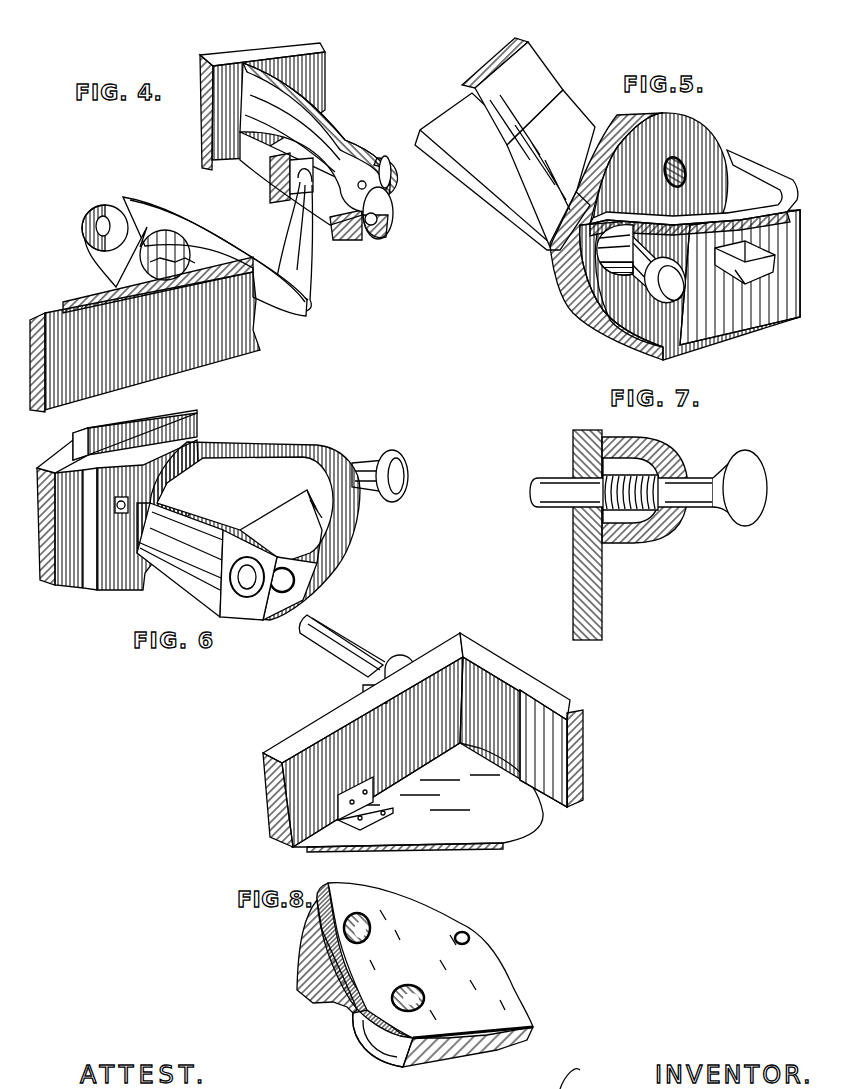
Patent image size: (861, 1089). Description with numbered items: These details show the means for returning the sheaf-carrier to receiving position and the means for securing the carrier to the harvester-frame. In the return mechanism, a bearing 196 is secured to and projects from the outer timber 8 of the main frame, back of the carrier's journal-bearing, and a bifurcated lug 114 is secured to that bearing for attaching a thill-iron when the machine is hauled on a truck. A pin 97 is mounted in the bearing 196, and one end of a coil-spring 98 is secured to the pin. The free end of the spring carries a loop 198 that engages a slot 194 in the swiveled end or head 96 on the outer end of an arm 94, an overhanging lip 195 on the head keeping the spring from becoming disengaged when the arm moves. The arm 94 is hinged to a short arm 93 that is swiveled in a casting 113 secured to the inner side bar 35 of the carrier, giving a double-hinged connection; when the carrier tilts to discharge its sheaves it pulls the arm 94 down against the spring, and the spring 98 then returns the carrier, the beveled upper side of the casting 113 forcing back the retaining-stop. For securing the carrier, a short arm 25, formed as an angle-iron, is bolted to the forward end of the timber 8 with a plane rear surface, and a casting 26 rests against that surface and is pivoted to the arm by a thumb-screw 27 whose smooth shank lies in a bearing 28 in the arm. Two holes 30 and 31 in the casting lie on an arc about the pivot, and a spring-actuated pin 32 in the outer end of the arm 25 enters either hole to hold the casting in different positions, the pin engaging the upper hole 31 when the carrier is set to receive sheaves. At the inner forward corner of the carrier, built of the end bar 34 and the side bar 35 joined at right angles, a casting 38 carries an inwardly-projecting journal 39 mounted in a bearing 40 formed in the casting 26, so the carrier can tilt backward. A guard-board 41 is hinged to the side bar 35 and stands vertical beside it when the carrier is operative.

In FIG. 4, the outer timber 8 is at (312, 79).
In FIG. 4, the bifurcated lug 114 is at (390, 176).
In FIG. 4, the pin 97 is at (394, 218).
In FIG. 4, the coil-spring 98 is at (310, 226).
In FIG. 4, the bearing 196 is at (258, 170).
In FIG. 4, the loop 198 is at (322, 278).
In FIG. 4, the overhanging lip 195 is at (328, 301).
In FIG. 4, the slot 194 is at (300, 312).
In FIG. 4, the swiveled end or head 96 is at (288, 312).
In FIG. 4, the arm 94 is at (176, 232).
In FIG. 4, the short arm 93 is at (114, 246).
In FIG. 4, the casting 113 is at (98, 294).
In FIG. 4, the inner side bar 35 is at (145, 342).
In FIG. 5, the inner side bar 35 is at (502, 171).
In FIG. 5, the end bar 34 is at (528, 142).
In FIG. 5, the short arm 25 is at (743, 164).
In FIG. 7, the short arm 25 is at (608, 568).
In FIG. 6, the short arm 25 is at (118, 500).
In FIG. 5, the casting 26 is at (675, 228).
In FIG. 6, the casting 26 is at (248, 531).
In FIG. 8, the casting 26 is at (415, 975).
In FIG. 5, the hole 31 is at (681, 160).
In FIG. 8, the hole 31 is at (373, 931).
In FIG. 5, the spring-actuated pin 32 is at (644, 267).
In FIG. 7, the spring-actuated pin 32 is at (648, 488).
In FIG. 6, the spring-actuated pin 32 is at (380, 476).
In FIG. 5, the thumb-screw 27 is at (743, 258).
In FIG. 5, the bearing 28 is at (719, 255).
In FIG. 6, the bearing 40 is at (207, 561).
In FIG. 6, the journal 39 is at (357, 659).
In FIG. 6, the casting 38 is at (520, 682).
In FIG. 6, the guard-board 41 is at (418, 797).
In FIG. 8, the hole 30 is at (427, 1003).